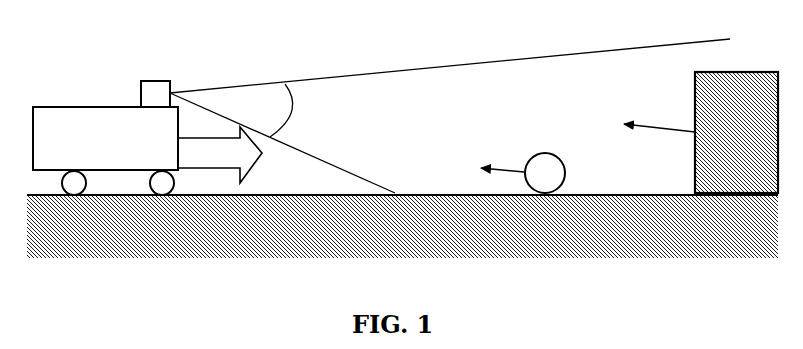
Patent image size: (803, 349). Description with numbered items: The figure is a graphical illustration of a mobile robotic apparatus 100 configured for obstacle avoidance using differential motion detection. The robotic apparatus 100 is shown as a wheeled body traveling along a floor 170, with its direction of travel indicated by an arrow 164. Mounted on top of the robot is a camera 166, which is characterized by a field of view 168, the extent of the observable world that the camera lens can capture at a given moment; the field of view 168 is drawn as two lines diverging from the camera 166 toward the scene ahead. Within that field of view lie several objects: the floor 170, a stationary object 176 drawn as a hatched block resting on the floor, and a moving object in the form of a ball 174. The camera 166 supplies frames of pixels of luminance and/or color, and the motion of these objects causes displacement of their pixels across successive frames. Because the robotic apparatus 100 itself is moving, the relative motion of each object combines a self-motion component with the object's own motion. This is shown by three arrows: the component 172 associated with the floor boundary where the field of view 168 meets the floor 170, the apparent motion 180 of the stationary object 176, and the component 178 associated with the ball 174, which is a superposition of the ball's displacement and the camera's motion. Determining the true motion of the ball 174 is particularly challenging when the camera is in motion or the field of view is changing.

The vehicle 100 is at (86, 140).
The arrow 164 is at (220, 155).
The camera 166 is at (146, 81).
The field of view 168 is at (287, 83).
The floor 170 is at (402, 226).
The component associated with the floor boundary 172 is at (414, 191).
The ball 174 is at (557, 153).
The stationary object 176 is at (752, 108).
The component associated with the moving ball 178 is at (521, 172).
The apparent motion 180 is at (657, 125).